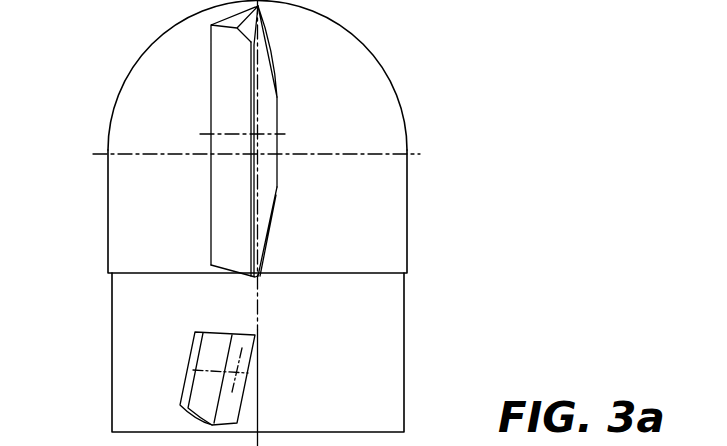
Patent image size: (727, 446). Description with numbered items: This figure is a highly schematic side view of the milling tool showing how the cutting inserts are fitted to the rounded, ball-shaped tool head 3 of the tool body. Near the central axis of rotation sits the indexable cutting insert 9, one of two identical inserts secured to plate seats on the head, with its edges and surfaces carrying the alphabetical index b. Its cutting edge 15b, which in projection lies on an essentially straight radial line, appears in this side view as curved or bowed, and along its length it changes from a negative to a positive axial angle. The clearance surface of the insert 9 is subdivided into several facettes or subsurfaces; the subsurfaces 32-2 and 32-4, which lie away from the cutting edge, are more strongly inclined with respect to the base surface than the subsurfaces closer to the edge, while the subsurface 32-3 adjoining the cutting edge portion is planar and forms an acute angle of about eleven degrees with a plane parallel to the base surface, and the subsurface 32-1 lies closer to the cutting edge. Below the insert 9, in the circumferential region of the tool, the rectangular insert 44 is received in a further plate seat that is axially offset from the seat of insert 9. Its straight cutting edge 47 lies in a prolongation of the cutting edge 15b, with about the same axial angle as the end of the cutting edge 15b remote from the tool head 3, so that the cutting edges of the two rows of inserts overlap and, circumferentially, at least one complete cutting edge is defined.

The tool head 3 is at (307, 4).
The clearance subsurface 32-2 is at (230, 62).
The indexable cutting insert 9 is at (233, 188).
The clearance subsurface 32-4 is at (230, 228).
The clearance subsurface 32-1 is at (272, 52).
The cutting edge 15b is at (280, 98).
The clearance subsurface 32-3 is at (263, 207).
The cutting insert 44 is at (263, 325).
The straight cutting edge 47 is at (225, 368).